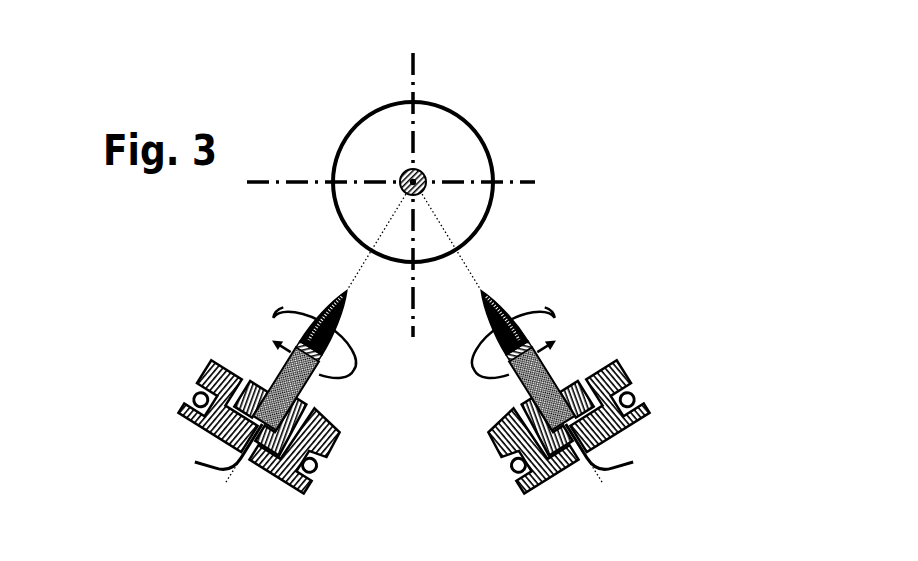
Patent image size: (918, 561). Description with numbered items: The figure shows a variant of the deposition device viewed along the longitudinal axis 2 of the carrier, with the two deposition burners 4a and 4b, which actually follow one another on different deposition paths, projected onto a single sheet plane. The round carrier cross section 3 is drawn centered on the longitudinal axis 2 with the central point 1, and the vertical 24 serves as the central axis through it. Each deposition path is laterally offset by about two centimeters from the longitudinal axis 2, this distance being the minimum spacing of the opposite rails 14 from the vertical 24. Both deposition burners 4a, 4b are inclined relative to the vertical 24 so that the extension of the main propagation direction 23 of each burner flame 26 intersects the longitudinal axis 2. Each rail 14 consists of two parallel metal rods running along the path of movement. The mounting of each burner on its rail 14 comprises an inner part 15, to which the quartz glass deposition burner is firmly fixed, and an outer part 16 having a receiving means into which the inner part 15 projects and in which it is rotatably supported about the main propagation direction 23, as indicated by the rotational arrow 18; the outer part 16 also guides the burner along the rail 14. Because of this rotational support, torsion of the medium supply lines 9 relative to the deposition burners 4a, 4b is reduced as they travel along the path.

The axis of rotation 1 is at (424, 176).
The longitudinal axis 2 is at (401, 176).
The rotor drum 3 is at (443, 138).
The deposition burner 4a is at (565, 349).
The deposition burner 4b is at (278, 368).
The medium supply line 9 is at (198, 460).
The rail 14 is at (193, 393).
The inner part 15 is at (592, 368).
The outer part 16 is at (210, 363).
The rotational arrow 18 is at (273, 312).
The main propagation direction 23 is at (356, 268).
The vertical 24 is at (412, 287).
The burner flame 26 is at (311, 315).